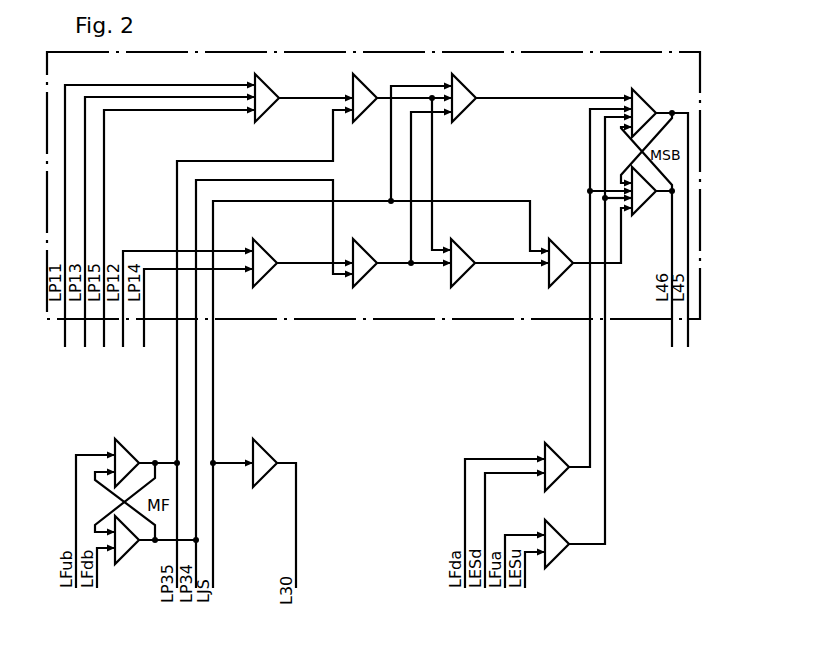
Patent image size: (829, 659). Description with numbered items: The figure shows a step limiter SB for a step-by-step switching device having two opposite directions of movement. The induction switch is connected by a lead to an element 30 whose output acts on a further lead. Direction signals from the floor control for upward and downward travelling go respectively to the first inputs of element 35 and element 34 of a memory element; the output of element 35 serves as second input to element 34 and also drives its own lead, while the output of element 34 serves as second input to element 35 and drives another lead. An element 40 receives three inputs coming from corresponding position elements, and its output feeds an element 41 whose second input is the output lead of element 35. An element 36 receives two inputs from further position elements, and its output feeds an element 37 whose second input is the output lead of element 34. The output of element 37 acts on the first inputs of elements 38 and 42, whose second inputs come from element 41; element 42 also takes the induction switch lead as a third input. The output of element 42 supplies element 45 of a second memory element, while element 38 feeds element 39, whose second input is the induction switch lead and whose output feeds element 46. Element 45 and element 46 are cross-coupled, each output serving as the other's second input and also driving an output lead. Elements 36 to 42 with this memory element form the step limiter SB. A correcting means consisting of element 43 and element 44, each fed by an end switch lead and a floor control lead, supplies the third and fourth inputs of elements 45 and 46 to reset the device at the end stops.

The element 30 is at (264, 452).
The element of memory element MF 34 is at (126, 553).
The element of memory element MF 35 is at (126, 452).
The element 36 is at (265, 250).
The element 37 is at (364, 250).
The element 38 is at (462, 250).
The element 39 is at (560, 250).
The element 40 is at (266, 85).
The element 41 is at (364, 85).
The element 42 is at (463, 85).
The element of correcting means 43 is at (556, 453).
The element of correcting means 44 is at (557, 532).
The element of memory element MSB 45 is at (643, 100).
The element of memory element MSB 46 is at (641, 211).
The step limiter SB is at (390, 321).